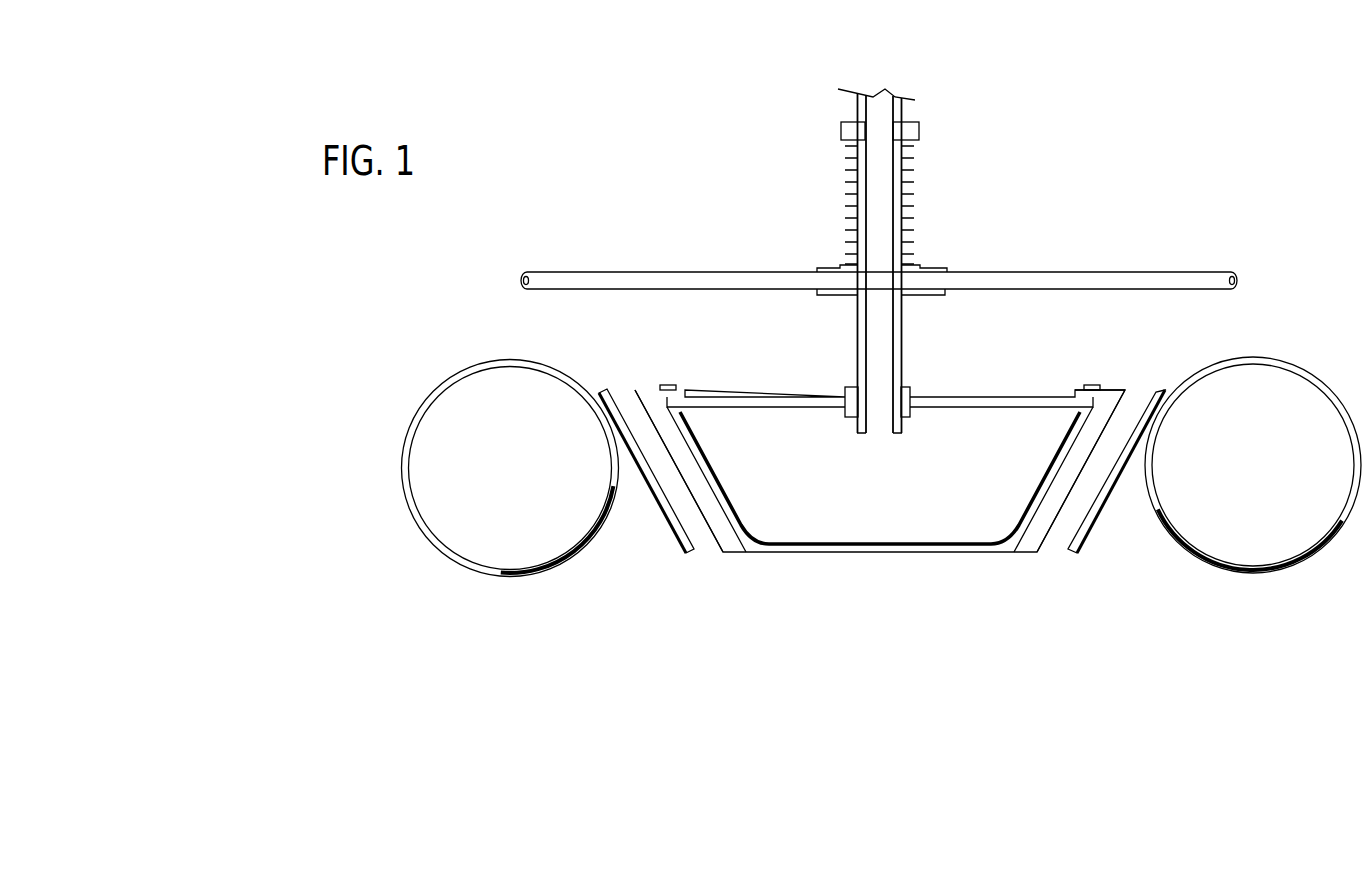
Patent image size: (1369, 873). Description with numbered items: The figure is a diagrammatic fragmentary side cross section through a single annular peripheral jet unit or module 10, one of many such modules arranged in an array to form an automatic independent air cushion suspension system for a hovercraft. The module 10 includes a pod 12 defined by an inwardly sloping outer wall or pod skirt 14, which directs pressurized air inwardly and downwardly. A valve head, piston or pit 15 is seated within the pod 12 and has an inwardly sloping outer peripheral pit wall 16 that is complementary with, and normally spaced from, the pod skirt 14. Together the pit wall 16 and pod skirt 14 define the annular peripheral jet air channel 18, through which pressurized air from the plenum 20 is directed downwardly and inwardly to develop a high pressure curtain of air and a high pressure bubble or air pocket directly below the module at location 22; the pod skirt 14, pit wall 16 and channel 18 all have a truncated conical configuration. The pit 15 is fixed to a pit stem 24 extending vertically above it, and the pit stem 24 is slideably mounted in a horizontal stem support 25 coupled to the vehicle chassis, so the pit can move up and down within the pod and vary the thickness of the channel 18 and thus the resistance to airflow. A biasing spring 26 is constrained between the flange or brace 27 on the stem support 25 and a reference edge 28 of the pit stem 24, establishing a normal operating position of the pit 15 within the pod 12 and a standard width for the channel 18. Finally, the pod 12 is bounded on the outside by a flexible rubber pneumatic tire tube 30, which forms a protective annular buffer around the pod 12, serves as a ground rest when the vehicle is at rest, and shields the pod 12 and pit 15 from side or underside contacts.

The peripheral jet unit or module 10 is at (538, 698).
The pod 12 is at (1123, 492).
The pod skirt 14 is at (678, 528).
The pit 15 is at (1025, 387).
The pit wall 16 is at (1040, 543).
The peripheral jet air channel 18 is at (620, 392).
The plenum 20 is at (758, 362).
The location 22 is at (850, 650).
The pit stem 24 is at (902, 322).
The horizontal stem support 25 is at (686, 271).
The biasing spring 26 is at (915, 201).
The flange 27 is at (926, 265).
The reference edge 28 is at (920, 118).
The pneumatic tire tube 30 is at (453, 375).